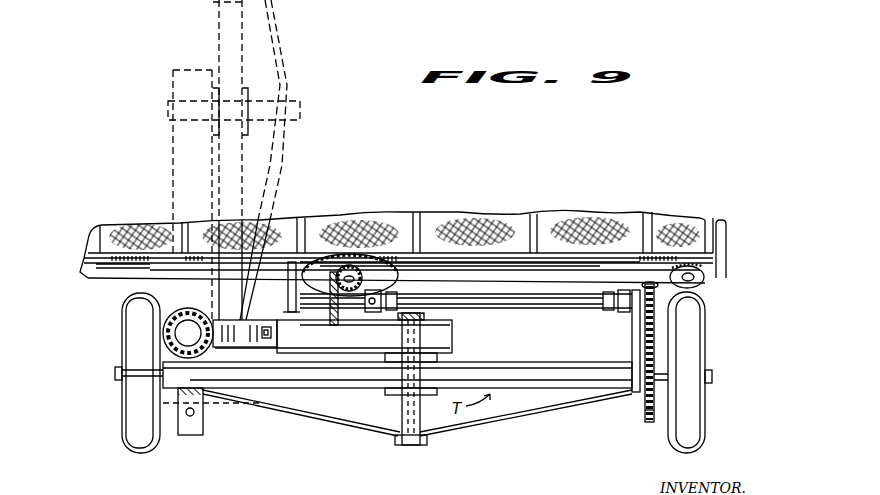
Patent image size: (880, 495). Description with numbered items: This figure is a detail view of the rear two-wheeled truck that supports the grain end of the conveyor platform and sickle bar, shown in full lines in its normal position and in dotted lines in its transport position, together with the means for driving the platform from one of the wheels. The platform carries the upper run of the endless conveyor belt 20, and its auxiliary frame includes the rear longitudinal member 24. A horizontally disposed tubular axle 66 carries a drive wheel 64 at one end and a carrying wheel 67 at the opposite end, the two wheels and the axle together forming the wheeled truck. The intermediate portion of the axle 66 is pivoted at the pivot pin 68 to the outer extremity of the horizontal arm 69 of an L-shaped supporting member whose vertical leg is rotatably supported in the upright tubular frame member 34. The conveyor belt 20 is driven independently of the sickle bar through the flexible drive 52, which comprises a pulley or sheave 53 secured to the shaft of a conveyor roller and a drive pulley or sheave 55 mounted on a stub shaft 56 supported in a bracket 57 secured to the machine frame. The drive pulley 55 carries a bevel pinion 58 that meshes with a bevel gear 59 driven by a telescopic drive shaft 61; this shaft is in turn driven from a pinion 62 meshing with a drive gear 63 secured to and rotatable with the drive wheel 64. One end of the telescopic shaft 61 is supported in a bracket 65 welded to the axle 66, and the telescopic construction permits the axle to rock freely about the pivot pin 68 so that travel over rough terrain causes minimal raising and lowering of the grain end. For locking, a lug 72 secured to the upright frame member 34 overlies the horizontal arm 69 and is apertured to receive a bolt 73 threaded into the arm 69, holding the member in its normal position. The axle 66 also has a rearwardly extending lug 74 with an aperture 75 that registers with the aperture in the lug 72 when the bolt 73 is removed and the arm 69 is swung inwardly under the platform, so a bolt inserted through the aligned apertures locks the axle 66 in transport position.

The endless conveyor belt 20 is at (583, 224).
The rear longitudinal member 24 is at (110, 268).
The upright tubular frame member 34 is at (186, 309).
The flexible drive 52 is at (476, 256).
The pulley or sheave 53 is at (704, 278).
The drive pulley or sheave 55 is at (336, 262).
The stub shaft 56 is at (378, 290).
The bracket 57 is at (258, 322).
The bevel pinion 58 is at (353, 270).
The bevel gear 59 is at (332, 270).
The telescopic drive shaft 61 is at (493, 309).
The pinion 62 is at (655, 302).
The drive gear 63 is at (645, 421).
The drive wheel 64 is at (690, 432).
The bracket 65 is at (632, 344).
The tubular axle 66 is at (547, 368).
The carrying wheel 67 is at (136, 426).
The pivot pin 68 is at (412, 446).
The horizontal arm 69 is at (134, 77).
The lug 72 is at (252, 322).
The bolt 73 is at (272, 334).
The rearwardly extending lug 74 is at (200, 430).
The aperture 75 is at (188, 416).